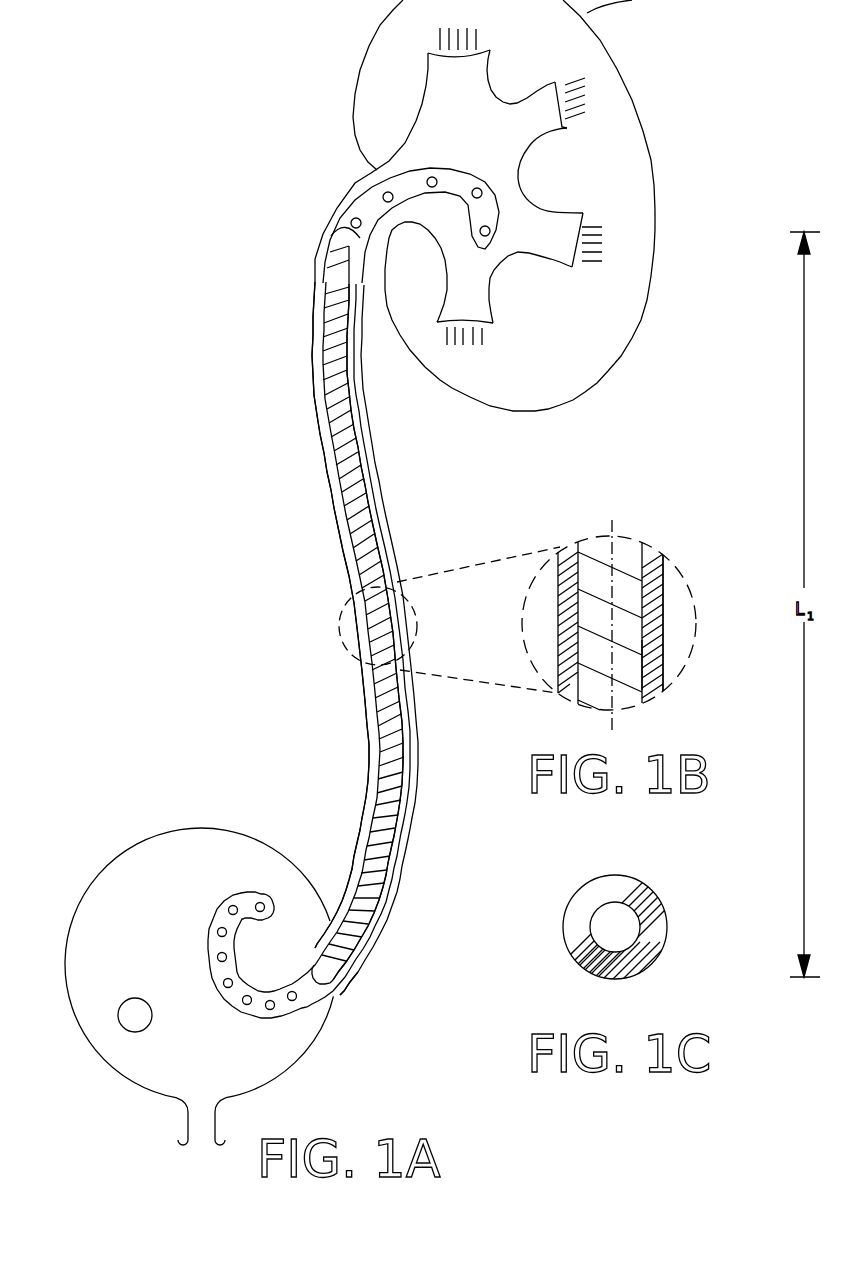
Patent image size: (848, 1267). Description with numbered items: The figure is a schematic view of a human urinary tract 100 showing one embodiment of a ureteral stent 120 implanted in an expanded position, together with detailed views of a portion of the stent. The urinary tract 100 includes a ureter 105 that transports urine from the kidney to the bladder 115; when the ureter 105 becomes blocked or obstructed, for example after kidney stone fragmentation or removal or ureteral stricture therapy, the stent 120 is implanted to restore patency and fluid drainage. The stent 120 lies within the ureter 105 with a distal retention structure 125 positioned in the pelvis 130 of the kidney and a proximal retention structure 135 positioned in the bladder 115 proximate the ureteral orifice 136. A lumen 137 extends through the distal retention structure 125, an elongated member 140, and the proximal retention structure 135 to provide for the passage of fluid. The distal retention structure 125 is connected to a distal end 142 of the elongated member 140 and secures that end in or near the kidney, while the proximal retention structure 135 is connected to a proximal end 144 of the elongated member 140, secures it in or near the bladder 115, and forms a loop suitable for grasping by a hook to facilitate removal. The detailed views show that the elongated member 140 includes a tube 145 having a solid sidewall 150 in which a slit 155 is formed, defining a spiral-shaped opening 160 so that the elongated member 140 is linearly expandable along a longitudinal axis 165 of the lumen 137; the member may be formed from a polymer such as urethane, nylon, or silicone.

In FIG. 1A, the human urinary tract 100 is at (238, 63).
In FIG. 1A, the ureter 105 is at (313, 382).
In FIG. 1A, the bladder 115 is at (150, 830).
In FIG. 1A, the ureteral stent 120 is at (329, 482).
In FIG. 1A, the distal retention structure 125 is at (497, 193).
In FIG. 1A, the pelvis 130 is at (518, 253).
In FIG. 1A, the proximal retention structure 135 is at (247, 1017).
In FIG. 1A, the ureteral orifice 136 is at (307, 1013).
In FIG. 1A, the lumen 137 is at (358, 523).
In FIG. 1B, the lumen 137 is at (625, 582).
In FIG. 1C, the lumen 137 is at (622, 920).
In FIG. 1A, the elongated member 140 is at (358, 437).
In FIG. 1A, the distal end 142 is at (327, 230).
In FIG. 1A, the proximal end 144 is at (318, 1000).
In FIG. 1A, the tube 145 is at (315, 332).
In FIG. 1B, the solid sidewall 150 is at (663, 597).
In FIG. 1C, the solid sidewall 150 is at (633, 957).
In FIG. 1A, the slit 155 is at (397, 793).
In FIG. 1B, the slit 155 is at (662, 627).
In FIG. 1B, the spiral-shaped opening 160 is at (651, 651).
In FIG. 1B, the longitudinal axis 165 is at (613, 527).